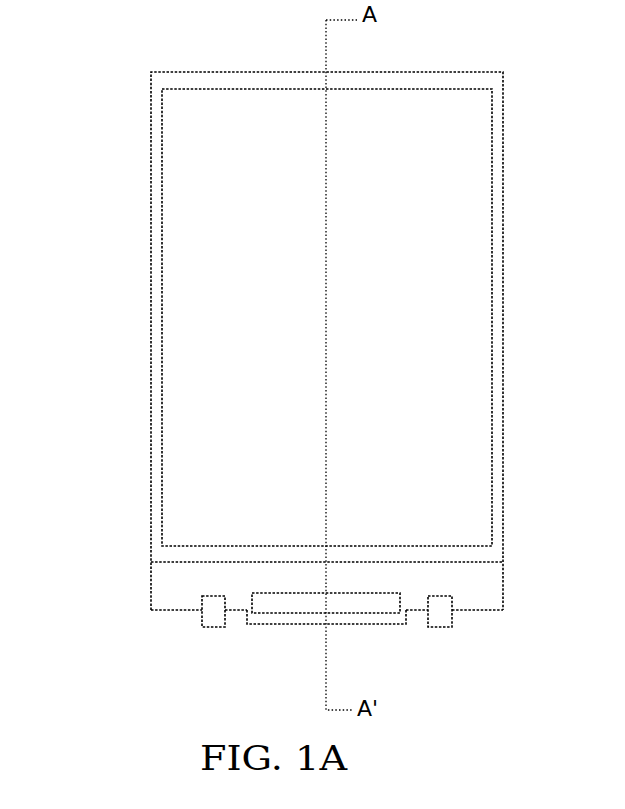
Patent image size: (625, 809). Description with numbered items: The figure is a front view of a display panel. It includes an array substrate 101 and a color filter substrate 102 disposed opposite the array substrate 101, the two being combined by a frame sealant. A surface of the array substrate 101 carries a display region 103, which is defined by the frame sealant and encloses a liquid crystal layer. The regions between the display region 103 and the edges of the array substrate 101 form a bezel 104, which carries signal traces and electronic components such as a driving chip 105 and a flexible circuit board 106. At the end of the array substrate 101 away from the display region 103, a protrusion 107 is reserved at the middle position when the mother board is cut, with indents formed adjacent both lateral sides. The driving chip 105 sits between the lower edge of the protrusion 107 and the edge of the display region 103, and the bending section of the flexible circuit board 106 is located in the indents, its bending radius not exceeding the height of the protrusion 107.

The array substrate 101 is at (150, 133).
The color filter substrate 102 is at (150, 213).
The display region 103 is at (421, 100).
The bezel 104 is at (168, 585).
The driving chip 105 is at (353, 614).
The flexible circuit board 106 is at (213, 627).
The protrusion 107 is at (275, 626).